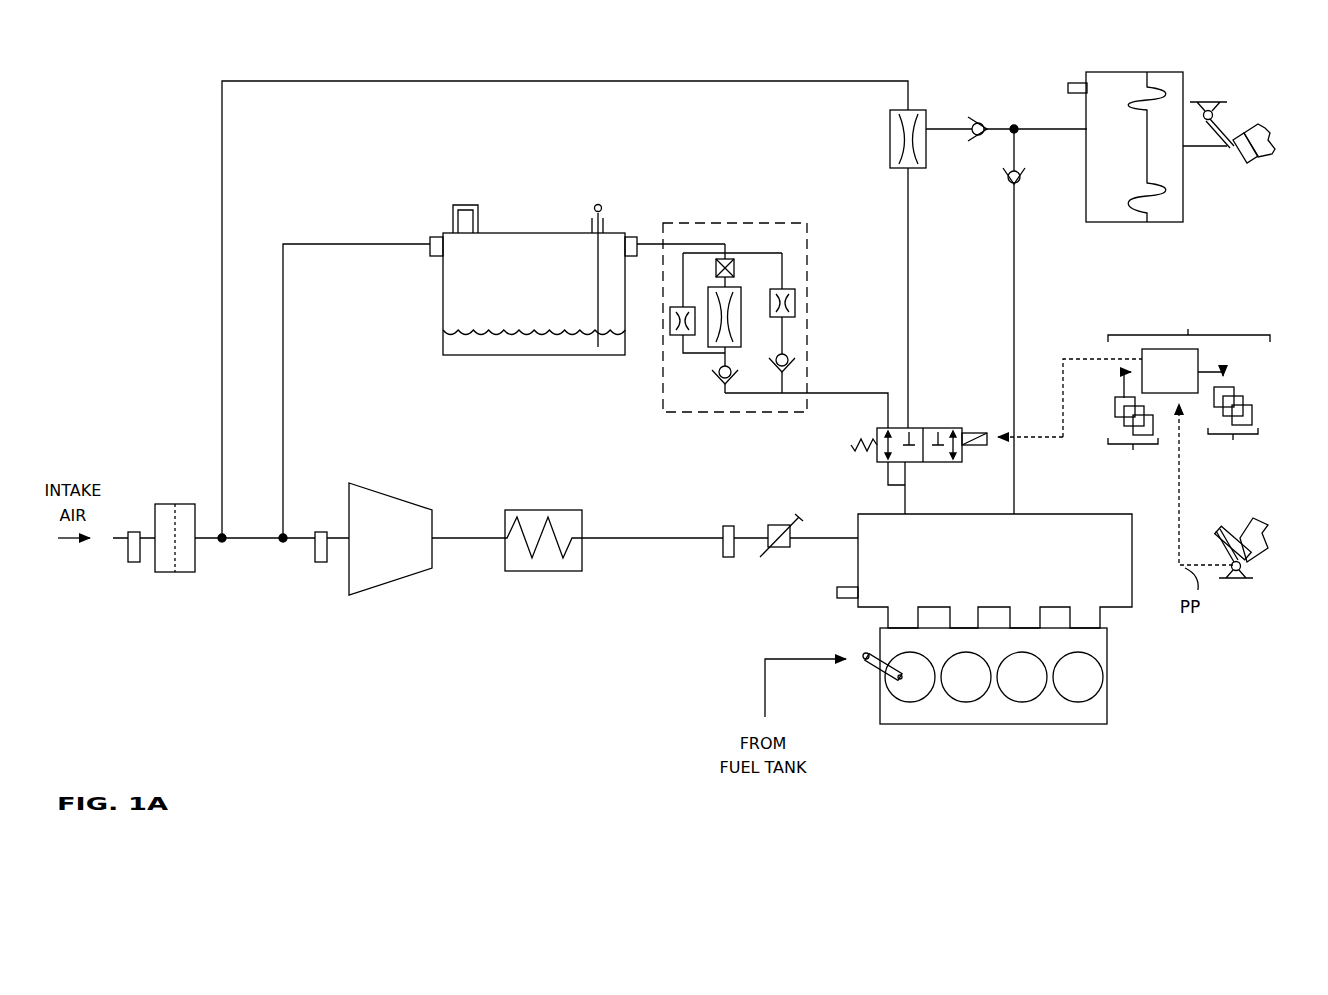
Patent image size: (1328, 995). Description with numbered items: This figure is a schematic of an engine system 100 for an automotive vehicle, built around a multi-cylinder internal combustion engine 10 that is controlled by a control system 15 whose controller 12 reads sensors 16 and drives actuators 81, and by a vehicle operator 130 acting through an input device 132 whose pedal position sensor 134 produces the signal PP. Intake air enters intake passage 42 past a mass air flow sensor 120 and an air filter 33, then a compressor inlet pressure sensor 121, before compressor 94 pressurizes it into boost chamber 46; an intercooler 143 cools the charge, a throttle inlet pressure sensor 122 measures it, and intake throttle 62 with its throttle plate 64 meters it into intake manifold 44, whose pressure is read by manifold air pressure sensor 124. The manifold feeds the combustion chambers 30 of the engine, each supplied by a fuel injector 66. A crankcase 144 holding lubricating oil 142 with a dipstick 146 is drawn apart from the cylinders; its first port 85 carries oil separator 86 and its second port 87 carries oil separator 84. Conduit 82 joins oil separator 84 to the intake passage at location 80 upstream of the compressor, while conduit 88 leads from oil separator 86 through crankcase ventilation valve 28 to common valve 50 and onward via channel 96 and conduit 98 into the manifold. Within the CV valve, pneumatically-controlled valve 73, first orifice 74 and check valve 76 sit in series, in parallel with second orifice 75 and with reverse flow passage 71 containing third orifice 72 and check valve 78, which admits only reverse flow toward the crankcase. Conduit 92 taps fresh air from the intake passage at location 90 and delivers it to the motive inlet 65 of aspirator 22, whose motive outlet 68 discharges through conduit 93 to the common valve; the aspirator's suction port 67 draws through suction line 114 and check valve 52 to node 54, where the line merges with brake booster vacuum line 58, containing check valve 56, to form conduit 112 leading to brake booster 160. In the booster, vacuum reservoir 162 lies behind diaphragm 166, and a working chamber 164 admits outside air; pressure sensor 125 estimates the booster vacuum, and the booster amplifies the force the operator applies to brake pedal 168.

The engine system 100 is at (96, 124).
The internal combustion engine 10 is at (722, 651).
The controller 12 is at (1170, 371).
The control system 15 is at (1189, 315).
The sensors 16 is at (1132, 431).
The actuators 81 is at (1236, 425).
The aspirator 22 is at (890, 140).
The crankcase ventilation valve 28 is at (770, 223).
The combustion chambers 30 is at (1107, 688).
The air filter 33 is at (175, 572).
The intake passage 42 is at (148, 535).
The intake manifold 44 is at (995, 571).
The boost chamber 46 is at (650, 540).
The common valve 50 is at (942, 428).
The check valve 52 is at (980, 122).
The node 54 is at (1022, 134).
The check valve 56 is at (1005, 178).
The brake booster vacuum line 58 is at (1016, 305).
The intake throttle 62 is at (782, 548).
The throttle plate 64 is at (791, 515).
The motive inlet 65 is at (917, 106).
The fuel injector 66 is at (868, 665).
The suction port 67 is at (932, 134).
The motive outlet 68 is at (901, 172).
The reverse flow passage 71 is at (782, 270).
The third orifice 72 is at (797, 303).
The pneumatically-controlled valve 73 is at (736, 268).
The first orifice 74 is at (742, 325).
The second orifice 75 is at (672, 337).
The check valve 76 is at (736, 370).
The check valve 78 is at (800, 365).
The location 80 is at (287, 534).
The conduit 82 is at (309, 244).
The oil separator 84 is at (430, 251).
The first port 85 is at (632, 228).
The oil separator 86 is at (636, 256).
The second port 87 is at (435, 234).
The crankcase ventilation tube 88 is at (868, 393).
The location 90 is at (219, 533).
The conduit 92 is at (263, 81).
The conduit 93 is at (909, 318).
The compressor 94 is at (390, 539).
The channel 96 is at (888, 482).
The conduit 98 is at (906, 505).
The conduit 112 is at (1068, 128).
The suction line 114 is at (948, 128).
The mass air flow sensor 120 is at (134, 562).
The compressor inlet pressure sensor 121 is at (321, 562).
The throttle inlet pressure sensor 122 is at (727, 526).
The manifold air pressure sensor 124 is at (838, 592).
The pressure sensor 125 is at (1070, 88).
The vehicle operator 130 is at (1262, 125).
The input device 132 is at (1220, 548).
The pedal position sensor 134 is at (1238, 580).
The lubricating oil 142 is at (518, 350).
The intercooler 143 is at (512, 510).
The crankcase 144 is at (443, 305).
The dipstick 146 is at (597, 268).
The brake booster 160 is at (1112, 72).
The vacuum reservoir 162 is at (1116, 147).
The working chamber 164 is at (1172, 205).
The diaphragm 166 is at (1143, 210).
The brake pedal 168 is at (1222, 155).